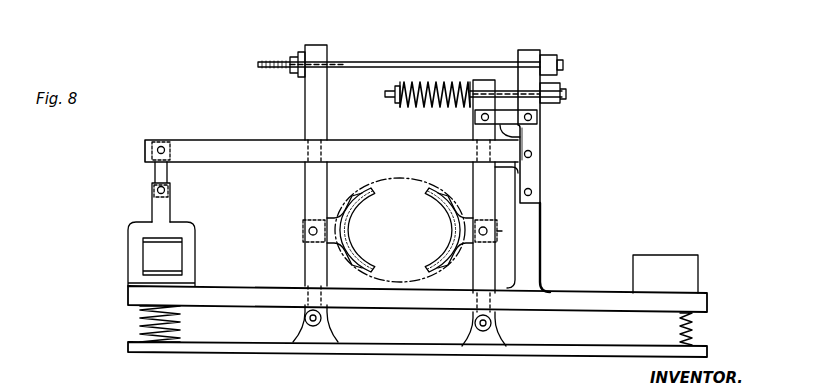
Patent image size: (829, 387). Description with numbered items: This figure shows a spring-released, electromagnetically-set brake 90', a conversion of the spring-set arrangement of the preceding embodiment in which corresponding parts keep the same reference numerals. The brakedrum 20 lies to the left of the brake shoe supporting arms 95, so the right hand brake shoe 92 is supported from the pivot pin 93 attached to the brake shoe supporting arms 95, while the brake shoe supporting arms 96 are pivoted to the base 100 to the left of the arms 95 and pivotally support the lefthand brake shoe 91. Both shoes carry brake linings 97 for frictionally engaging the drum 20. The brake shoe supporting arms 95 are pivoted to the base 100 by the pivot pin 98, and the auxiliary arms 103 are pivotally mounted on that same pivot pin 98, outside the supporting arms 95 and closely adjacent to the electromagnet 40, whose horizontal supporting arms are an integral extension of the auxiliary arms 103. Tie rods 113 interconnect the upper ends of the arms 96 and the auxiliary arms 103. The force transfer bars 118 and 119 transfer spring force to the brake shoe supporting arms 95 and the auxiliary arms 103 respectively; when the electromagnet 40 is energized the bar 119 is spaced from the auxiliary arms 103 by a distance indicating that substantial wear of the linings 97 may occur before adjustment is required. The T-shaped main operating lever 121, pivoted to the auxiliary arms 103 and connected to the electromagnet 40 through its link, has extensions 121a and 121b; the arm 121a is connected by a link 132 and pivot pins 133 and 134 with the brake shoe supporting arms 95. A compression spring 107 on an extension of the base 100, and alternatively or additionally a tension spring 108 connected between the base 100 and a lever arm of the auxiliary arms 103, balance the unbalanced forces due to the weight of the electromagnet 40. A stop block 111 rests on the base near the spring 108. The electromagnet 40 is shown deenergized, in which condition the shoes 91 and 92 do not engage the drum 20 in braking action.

The brakedrum 20 is at (412, 227).
The electromagnet 40 is at (120, 253).
The brake 90' is at (409, 367).
The lefthand brake shoe 91 is at (346, 191).
The right hand brake shoe 92 is at (462, 185).
The pivot pin 93 is at (490, 231).
The brake shoe supporting arms 95 is at (505, 262).
The brake shoe supporting arms 96 is at (303, 180).
The brake linings 97 is at (362, 195).
The pivot pin 98 is at (492, 323).
The base 100 is at (375, 348).
The auxiliary arms 103 is at (542, 233).
The compression spring 107 is at (140, 322).
The tension spring 108 is at (695, 333).
The stop block 111 is at (680, 238).
The tie rods 113 is at (396, 62).
The force transfer bar 118 is at (468, 82).
The force transfer bar 119 is at (548, 80).
The main operating lever 121 is at (268, 140).
The arm of the main operating lever 121a is at (530, 129).
The extension of the main operating lever 121b is at (540, 185).
The link 132 is at (515, 137).
The pivot pin 133 is at (481, 117).
The pivot pin 134 is at (535, 118).